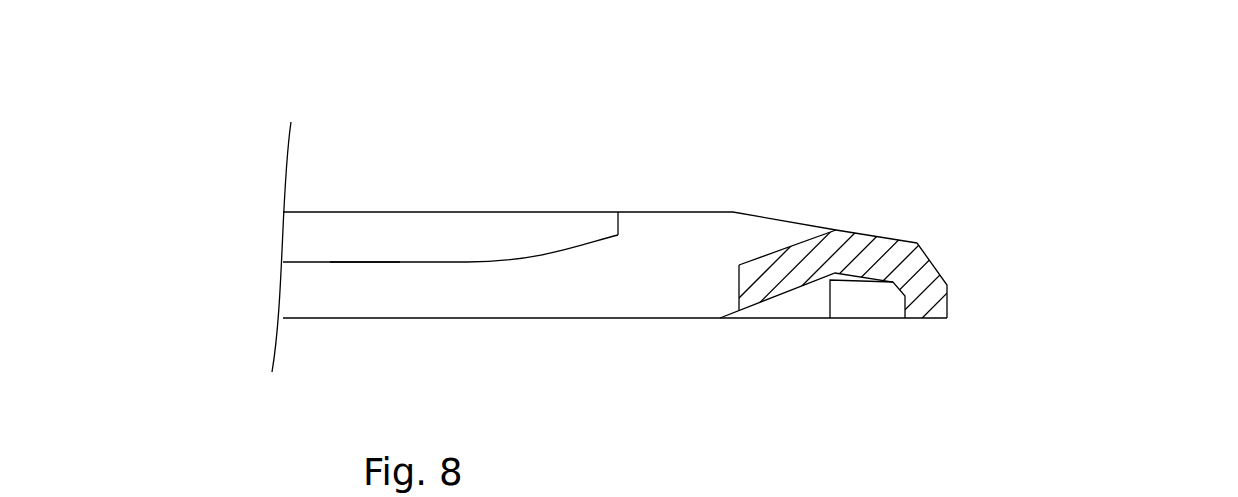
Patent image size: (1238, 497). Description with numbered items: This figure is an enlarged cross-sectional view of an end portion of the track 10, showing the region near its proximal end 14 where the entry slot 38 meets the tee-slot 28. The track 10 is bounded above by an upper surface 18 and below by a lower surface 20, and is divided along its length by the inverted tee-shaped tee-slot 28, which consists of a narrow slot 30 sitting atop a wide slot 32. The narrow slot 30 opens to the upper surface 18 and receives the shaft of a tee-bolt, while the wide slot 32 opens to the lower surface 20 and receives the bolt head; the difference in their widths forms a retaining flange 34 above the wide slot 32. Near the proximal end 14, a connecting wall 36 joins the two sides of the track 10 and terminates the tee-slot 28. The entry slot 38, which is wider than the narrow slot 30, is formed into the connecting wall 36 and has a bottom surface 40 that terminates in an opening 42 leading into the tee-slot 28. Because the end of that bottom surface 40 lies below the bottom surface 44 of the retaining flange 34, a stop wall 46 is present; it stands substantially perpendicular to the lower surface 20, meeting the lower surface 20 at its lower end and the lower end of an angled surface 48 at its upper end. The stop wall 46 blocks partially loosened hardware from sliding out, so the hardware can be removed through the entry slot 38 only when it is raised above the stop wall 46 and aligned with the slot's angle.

The track 10 is at (947, 105).
The proximal end 14 is at (1027, 260).
The upper surface 18 is at (690, 212).
The lower surface 20 is at (867, 318).
The tee-slot 28 is at (300, 250).
The narrow slot 30 is at (323, 228).
The wide slot 32 is at (343, 295).
The retaining flange 34 is at (445, 232).
The connecting wall 36 is at (917, 263).
The entry slot 38 is at (898, 200).
The bottom surface 40 is at (773, 250).
The opening 42 is at (652, 255).
The bottom surface of the retaining flange 44 is at (342, 262).
The stop wall 46 is at (738, 286).
The angled surface 48 is at (836, 228).